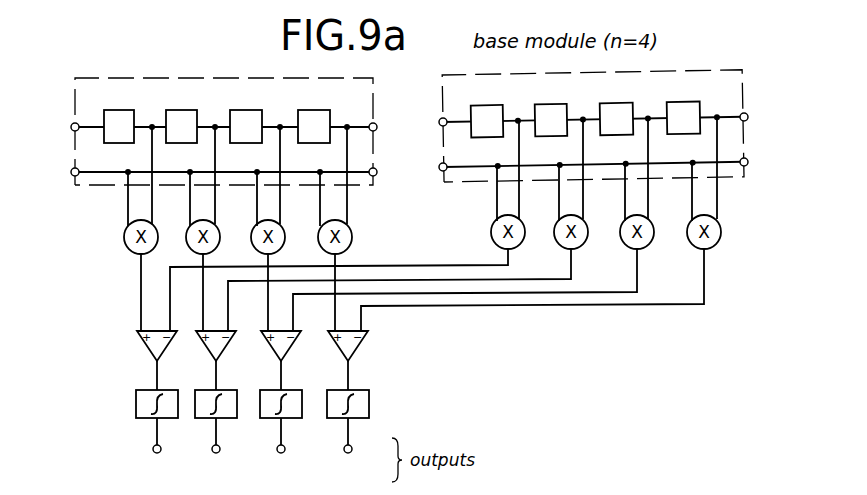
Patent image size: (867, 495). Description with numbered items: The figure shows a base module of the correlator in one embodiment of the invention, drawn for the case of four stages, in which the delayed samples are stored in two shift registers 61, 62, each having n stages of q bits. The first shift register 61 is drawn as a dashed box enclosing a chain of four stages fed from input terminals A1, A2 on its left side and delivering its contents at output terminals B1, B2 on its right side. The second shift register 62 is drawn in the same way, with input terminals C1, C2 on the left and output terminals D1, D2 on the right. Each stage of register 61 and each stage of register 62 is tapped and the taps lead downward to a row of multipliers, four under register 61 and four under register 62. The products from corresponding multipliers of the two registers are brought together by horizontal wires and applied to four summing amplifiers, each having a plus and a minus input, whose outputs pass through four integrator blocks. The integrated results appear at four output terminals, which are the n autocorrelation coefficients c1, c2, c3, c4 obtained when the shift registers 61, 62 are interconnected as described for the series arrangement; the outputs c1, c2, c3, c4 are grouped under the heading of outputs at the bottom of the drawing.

The shift register 61 is at (121, 80).
The shift register 62 is at (712, 78).
The first input terminal of module 61 A1 is at (63, 113).
The second input terminal of module 61 A2 is at (63, 172).
The first output terminal of module 61 B1 is at (385, 112).
The second output terminal of module 61 B2 is at (385, 183).
The first input terminal of module 62 C1 is at (429, 124).
The second input terminal of module 62 C2 is at (429, 165).
The first output terminal of module 62 D1 is at (756, 108).
The second output terminal of module 62 D2 is at (756, 157).
The autocorrelation coefficient c1 is at (154, 467).
The autocorrelation coefficient c2 is at (216, 467).
The autocorrelation coefficient c3 is at (279, 467).
The autocorrelation coefficient c4 is at (349, 467).